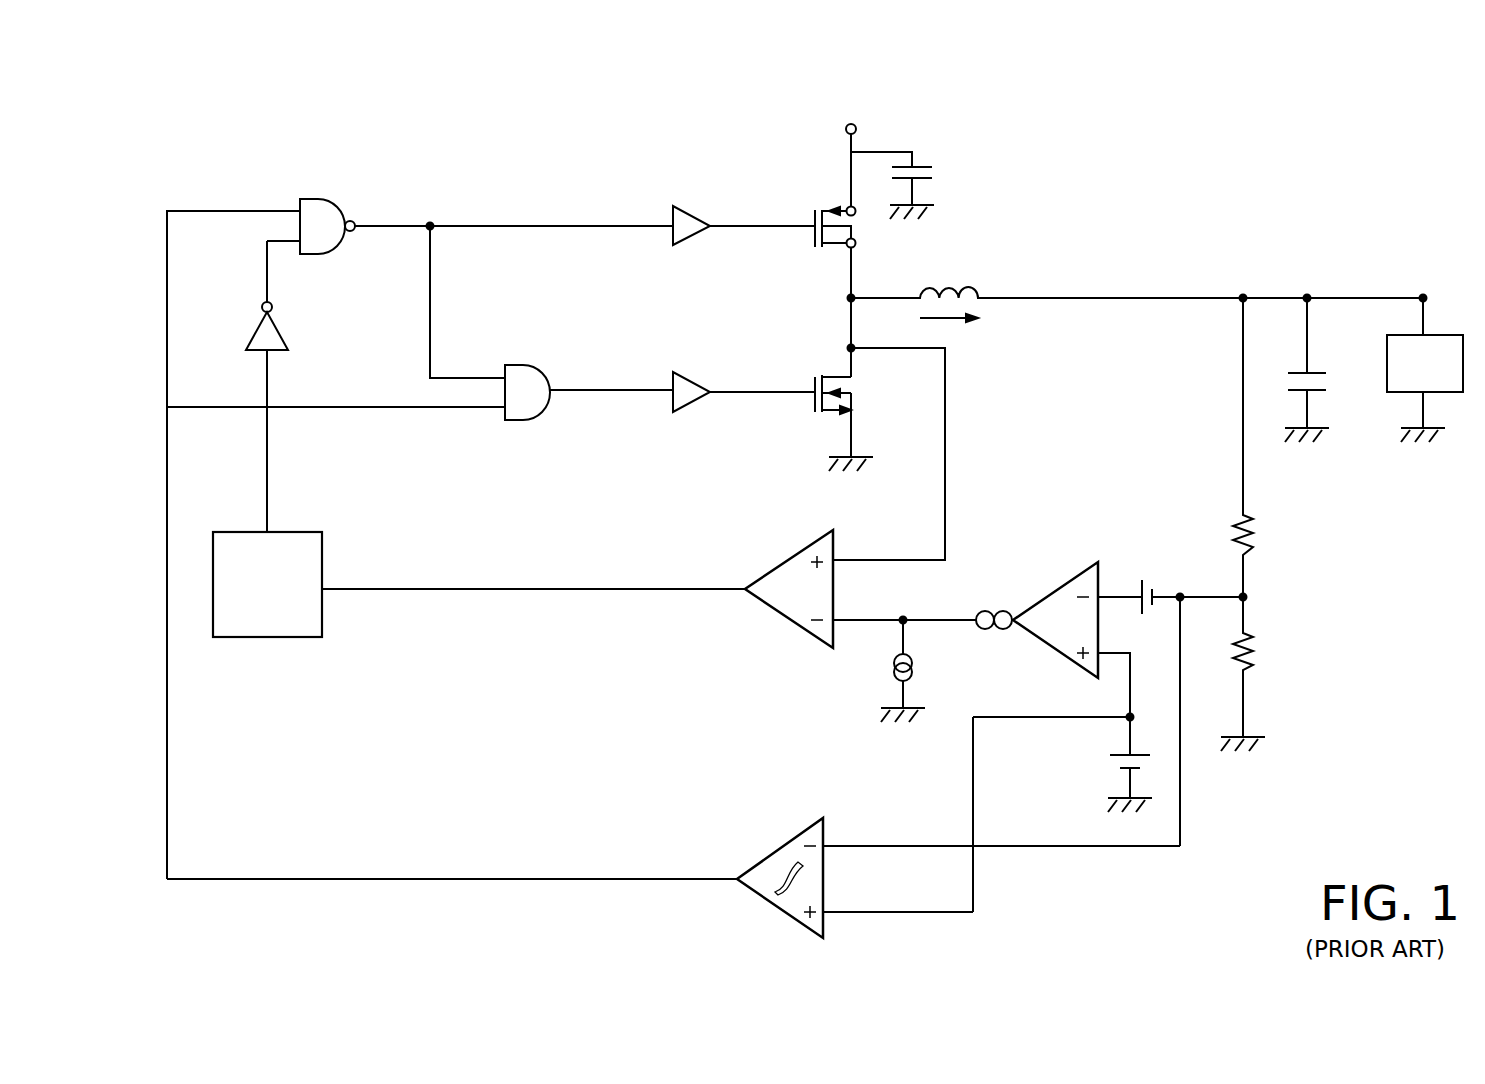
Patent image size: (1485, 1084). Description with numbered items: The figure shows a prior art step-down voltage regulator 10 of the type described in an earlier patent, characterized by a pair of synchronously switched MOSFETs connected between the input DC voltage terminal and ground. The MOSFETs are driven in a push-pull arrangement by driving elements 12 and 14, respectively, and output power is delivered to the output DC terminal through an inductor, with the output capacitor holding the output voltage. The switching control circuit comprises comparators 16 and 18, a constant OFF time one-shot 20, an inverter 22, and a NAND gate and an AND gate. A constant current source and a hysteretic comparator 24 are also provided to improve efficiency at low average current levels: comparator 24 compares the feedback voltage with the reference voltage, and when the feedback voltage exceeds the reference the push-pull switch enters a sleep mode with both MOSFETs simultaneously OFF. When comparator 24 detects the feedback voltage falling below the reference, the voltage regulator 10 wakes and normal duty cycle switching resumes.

The step-down voltage regulator 10 is at (1058, 180).
The driving element 12 is at (689, 209).
The driving element 14 is at (689, 375).
The comparator 16 is at (803, 551).
The comparator 18 is at (1066, 660).
The constant OFF time one-shot 20 is at (293, 532).
The inverter 22 is at (281, 328).
The hysteretic comparator 24 is at (792, 843).